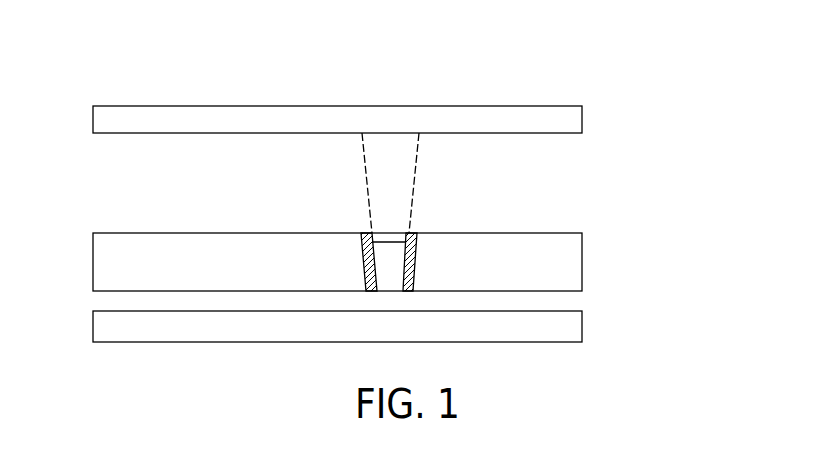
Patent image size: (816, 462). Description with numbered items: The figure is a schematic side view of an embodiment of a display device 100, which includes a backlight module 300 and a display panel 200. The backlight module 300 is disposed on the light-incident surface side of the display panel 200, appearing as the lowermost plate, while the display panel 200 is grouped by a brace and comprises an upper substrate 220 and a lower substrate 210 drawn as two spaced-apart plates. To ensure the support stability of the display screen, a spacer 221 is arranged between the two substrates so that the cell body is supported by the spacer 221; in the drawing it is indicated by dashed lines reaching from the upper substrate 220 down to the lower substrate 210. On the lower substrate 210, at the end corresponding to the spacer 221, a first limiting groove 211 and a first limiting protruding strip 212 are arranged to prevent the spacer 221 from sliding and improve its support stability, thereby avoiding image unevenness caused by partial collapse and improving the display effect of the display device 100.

The display device 100 is at (154, 28).
The display panel 200 is at (635, 120).
The cover plate 220 is at (555, 118).
The spacer 221 is at (387, 186).
The substrate layer 210 is at (555, 303).
The first limiting groove 211 is at (392, 263).
The first limiting protruding strip 212 is at (362, 233).
The backlight module 300 is at (555, 328).